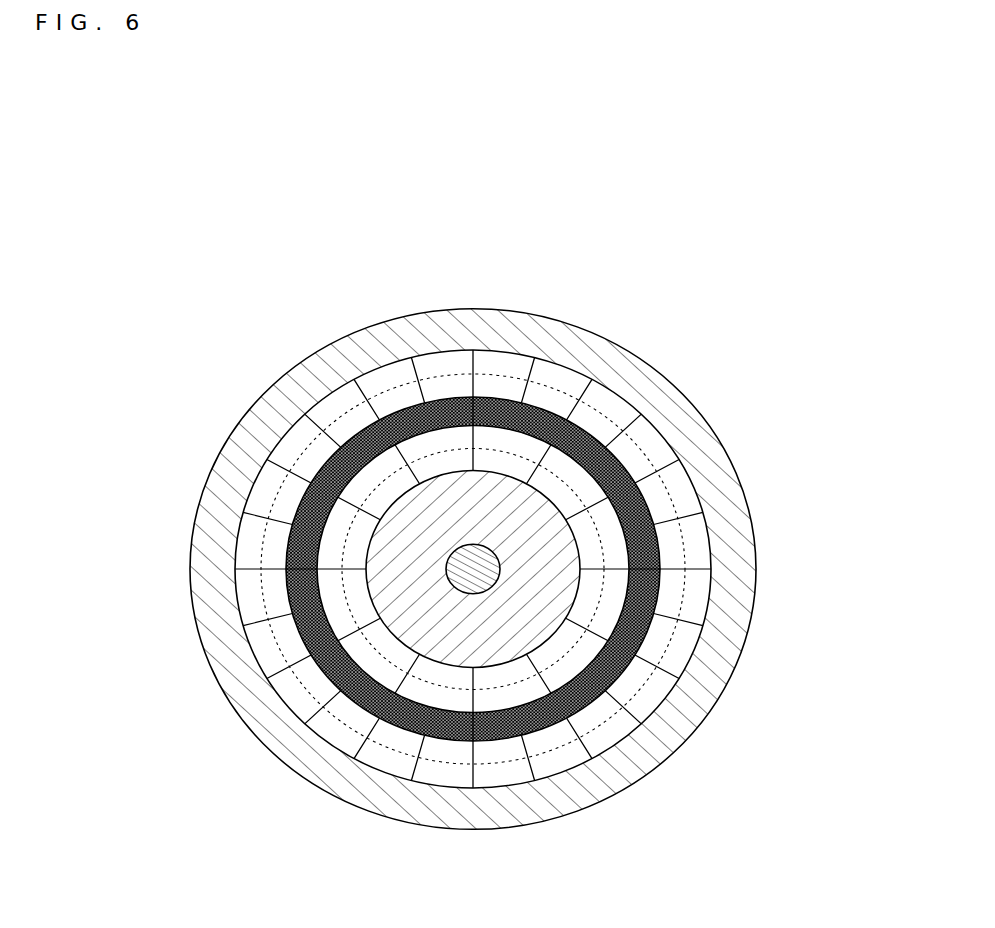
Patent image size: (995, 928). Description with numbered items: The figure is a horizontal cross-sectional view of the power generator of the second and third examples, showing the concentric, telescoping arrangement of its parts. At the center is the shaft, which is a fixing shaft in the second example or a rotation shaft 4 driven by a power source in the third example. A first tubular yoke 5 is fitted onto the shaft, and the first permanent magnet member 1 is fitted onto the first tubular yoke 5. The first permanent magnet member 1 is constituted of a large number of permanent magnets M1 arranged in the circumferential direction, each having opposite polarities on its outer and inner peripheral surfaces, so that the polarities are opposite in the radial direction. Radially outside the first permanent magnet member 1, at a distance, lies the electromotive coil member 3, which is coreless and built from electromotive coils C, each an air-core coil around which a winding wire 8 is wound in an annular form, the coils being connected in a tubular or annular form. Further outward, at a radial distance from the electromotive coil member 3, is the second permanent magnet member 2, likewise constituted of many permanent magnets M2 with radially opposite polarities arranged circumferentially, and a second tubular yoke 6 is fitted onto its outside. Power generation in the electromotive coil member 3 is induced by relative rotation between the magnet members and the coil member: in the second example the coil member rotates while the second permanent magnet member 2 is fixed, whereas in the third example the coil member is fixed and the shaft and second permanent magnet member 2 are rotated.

The first permanent magnet member 1 is at (394, 622).
The second permanent magnet member 2 is at (555, 354).
The electromotive coil member 3 is at (362, 415).
The rotation shaft 4 is at (660, 580).
The first tubular yoke 5 is at (473, 569).
The second tubular yoke 6 is at (611, 785).
The winding wire 8 is at (703, 643).
The permanent magnets M1 is at (400, 482).
The permanent magnets M2 is at (471, 569).
The electromotive coil C is at (715, 533).